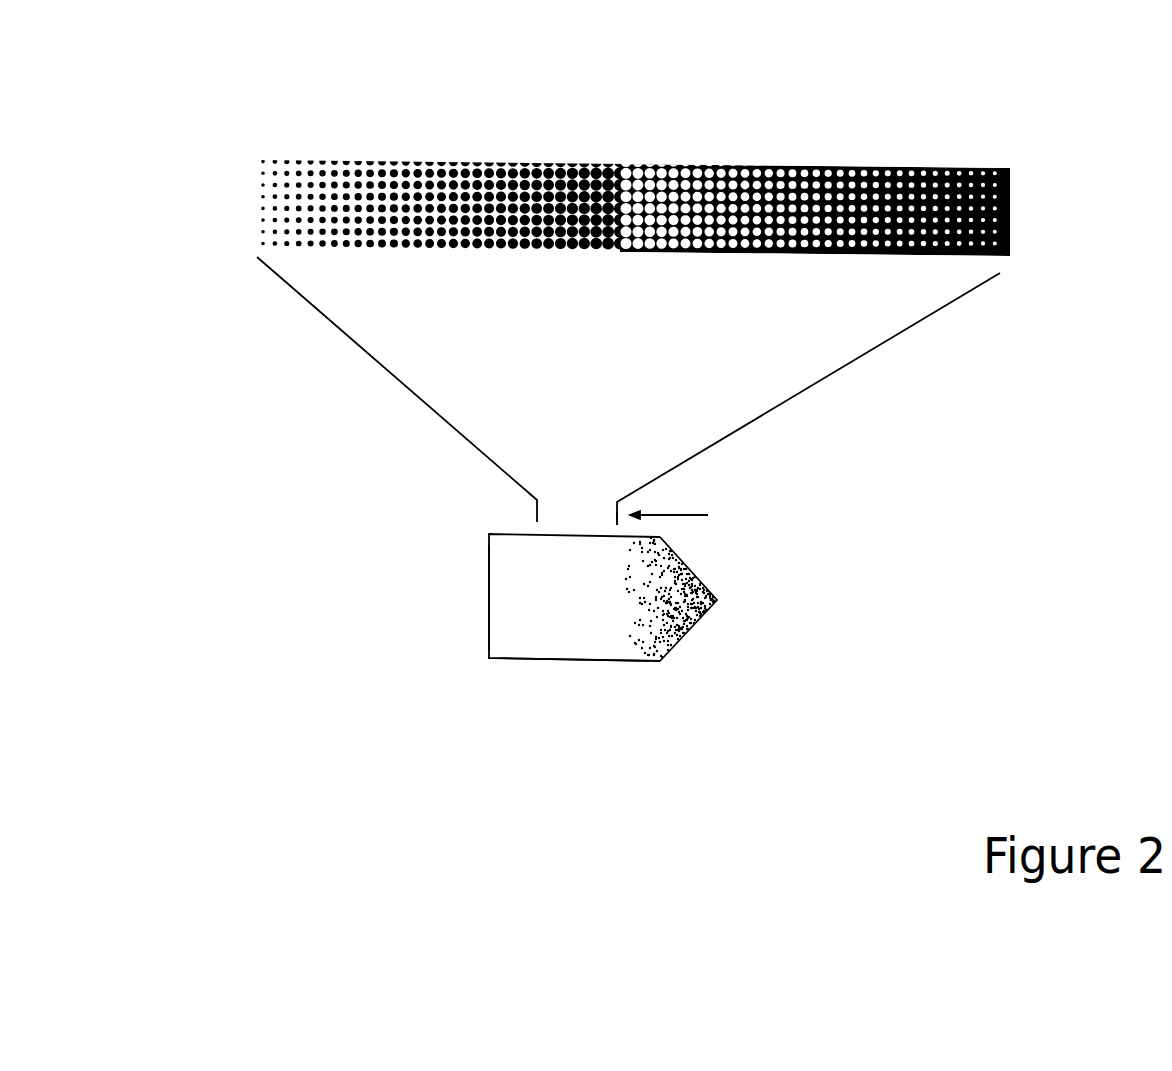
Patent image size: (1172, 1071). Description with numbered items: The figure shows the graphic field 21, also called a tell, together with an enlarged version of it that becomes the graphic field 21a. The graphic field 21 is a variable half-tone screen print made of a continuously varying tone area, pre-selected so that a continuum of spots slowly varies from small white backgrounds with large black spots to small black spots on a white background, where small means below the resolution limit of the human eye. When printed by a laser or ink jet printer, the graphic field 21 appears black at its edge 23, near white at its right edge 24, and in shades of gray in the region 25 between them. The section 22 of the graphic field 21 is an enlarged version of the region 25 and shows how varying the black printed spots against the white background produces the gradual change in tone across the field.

The graphic field 21 is at (513, 510).
The enlarged graphic field 21a is at (245, 200).
The section 22 is at (718, 517).
The edge 23 is at (728, 605).
The right edge 24 is at (478, 590).
The region 25 is at (572, 643).